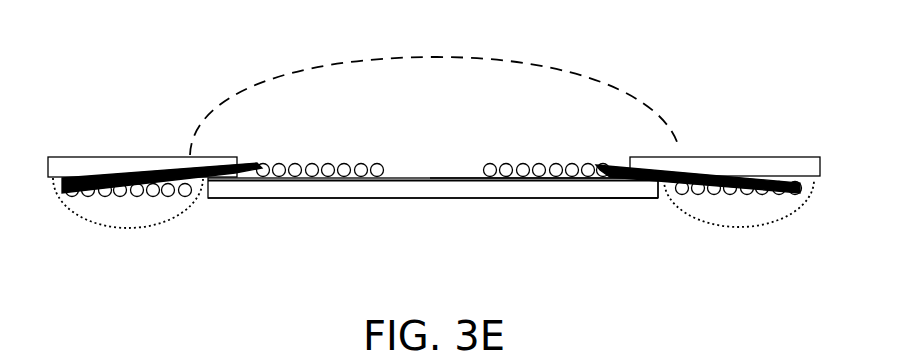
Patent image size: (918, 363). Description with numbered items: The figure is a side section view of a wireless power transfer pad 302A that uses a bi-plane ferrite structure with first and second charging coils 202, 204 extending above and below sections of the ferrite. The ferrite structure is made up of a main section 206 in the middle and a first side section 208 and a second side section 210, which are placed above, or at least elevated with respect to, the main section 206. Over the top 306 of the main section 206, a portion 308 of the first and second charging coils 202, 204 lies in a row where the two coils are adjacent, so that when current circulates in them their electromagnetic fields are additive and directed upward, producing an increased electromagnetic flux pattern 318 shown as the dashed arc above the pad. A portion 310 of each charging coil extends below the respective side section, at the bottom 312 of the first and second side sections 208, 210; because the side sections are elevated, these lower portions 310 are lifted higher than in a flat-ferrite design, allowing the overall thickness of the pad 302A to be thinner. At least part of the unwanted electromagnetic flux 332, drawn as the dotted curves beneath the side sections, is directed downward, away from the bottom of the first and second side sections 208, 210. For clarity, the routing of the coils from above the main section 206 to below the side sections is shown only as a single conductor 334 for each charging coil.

The wireless power transfer pad 302A is at (126, 63).
The first charging coil 202 is at (292, 179).
The second charging coil 204 is at (578, 180).
The main section 206 is at (533, 199).
The first side section 208 is at (163, 157).
The second side section 210 is at (739, 157).
The top of main section 306 is at (437, 174).
The portion of charging coils over main section 308 is at (366, 179).
The portion of charging coils below side sections 310 is at (146, 201).
The bottom of side sections 312 is at (343, 202).
The electromagnetic flux pattern 318 is at (587, 73).
The unwanted electromagnetic flux 332 is at (115, 228).
The single conductor 334 is at (148, 180).